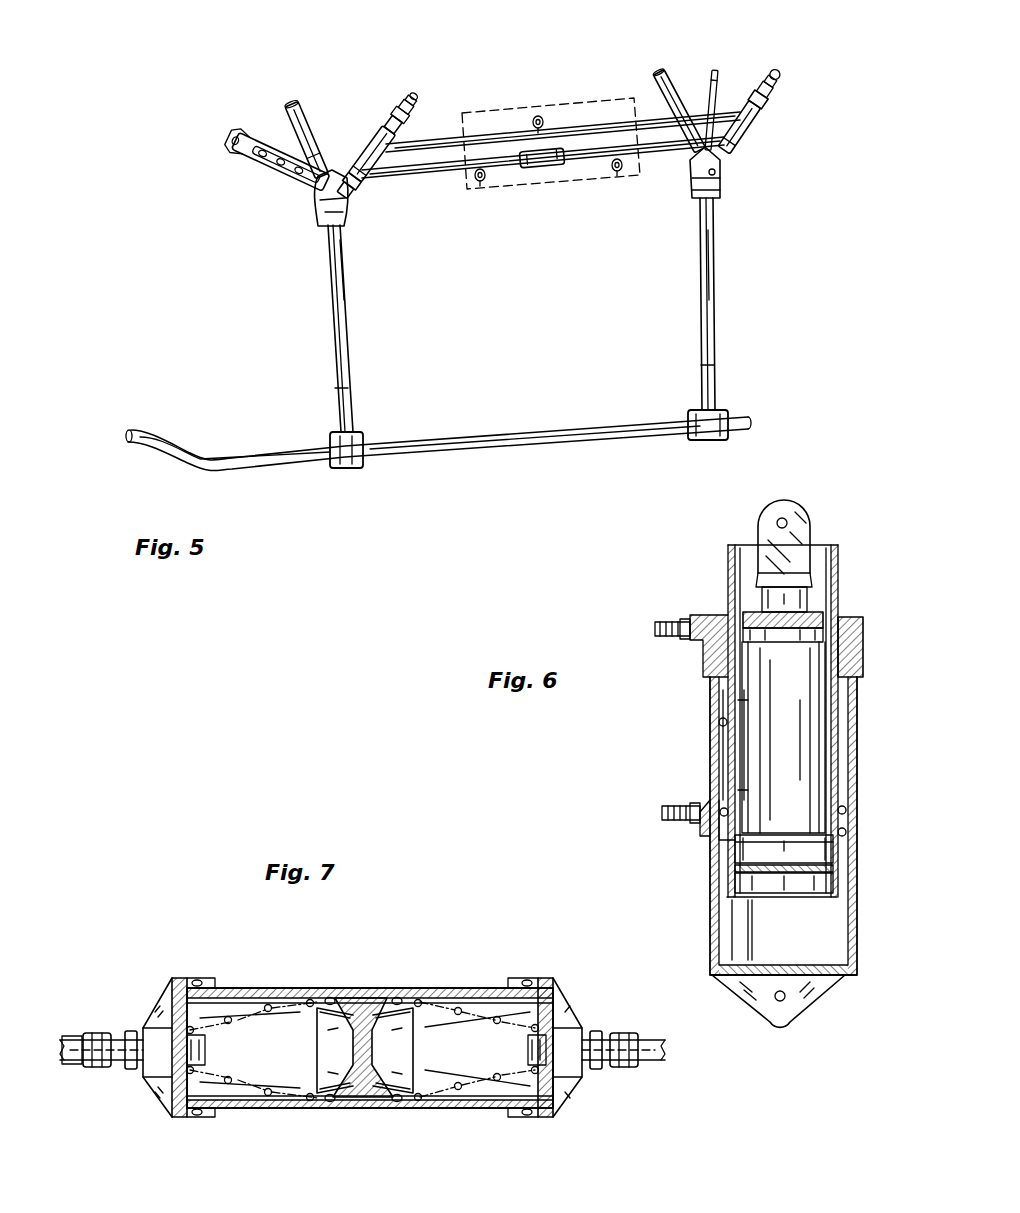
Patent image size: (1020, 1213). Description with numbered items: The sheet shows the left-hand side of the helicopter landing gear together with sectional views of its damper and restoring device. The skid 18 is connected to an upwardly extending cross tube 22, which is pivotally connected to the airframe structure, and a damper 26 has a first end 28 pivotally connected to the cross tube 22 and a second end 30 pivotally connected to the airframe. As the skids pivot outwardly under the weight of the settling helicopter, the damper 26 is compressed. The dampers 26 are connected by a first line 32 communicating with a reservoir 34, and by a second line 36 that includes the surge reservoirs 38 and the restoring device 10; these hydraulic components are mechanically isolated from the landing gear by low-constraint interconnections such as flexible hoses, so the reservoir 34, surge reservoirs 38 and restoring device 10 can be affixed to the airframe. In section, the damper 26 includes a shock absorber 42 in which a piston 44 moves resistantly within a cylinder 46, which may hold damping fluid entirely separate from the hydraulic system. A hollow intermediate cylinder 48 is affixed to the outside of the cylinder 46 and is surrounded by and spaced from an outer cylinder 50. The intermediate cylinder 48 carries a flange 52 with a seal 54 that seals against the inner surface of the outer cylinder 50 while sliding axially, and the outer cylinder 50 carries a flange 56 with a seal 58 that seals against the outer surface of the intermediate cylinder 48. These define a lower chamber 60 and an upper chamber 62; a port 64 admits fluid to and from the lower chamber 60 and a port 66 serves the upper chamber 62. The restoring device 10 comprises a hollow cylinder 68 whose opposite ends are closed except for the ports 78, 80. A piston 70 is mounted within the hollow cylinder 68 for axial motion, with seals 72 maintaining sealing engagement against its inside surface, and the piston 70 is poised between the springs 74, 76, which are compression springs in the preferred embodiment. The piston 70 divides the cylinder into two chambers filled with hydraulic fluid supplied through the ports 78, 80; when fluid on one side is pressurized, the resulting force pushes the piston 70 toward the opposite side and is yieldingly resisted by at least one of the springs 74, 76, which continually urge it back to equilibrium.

In FIG. 5, the restoring device 10 is at (548, 168).
In FIG. 7, the restoring device 10 is at (420, 1120).
In FIG. 5, the skid 18 is at (496, 456).
In FIG. 5, the cross tube 22 is at (340, 318).
In FIG. 5, the damper 26 is at (372, 145).
In FIG. 6, the damper 26 is at (878, 776).
In FIG. 5, the first end 28 is at (722, 168).
In FIG. 6, the first end 28 is at (790, 1012).
In FIG. 5, the second end 30 is at (782, 72).
In FIG. 6, the second end 30 is at (800, 500).
In FIG. 5, the first line 32 is at (436, 138).
In FIG. 5, the reservoir 34 is at (542, 117).
In FIG. 5, the second line 36 is at (403, 178).
In FIG. 5, the surge reservoirs 38 is at (478, 186).
In FIG. 6, the shock absorber 42 is at (805, 718).
In FIG. 6, the piston 44 is at (760, 598).
In FIG. 6, the cylinder 46 is at (822, 660).
In FIG. 6, the hollow intermediate cylinder 48 is at (730, 553).
In FIG. 6, the outer cylinder 50 is at (856, 886).
In FIG. 6, the flange 52 is at (750, 745).
In FIG. 6, the seal 54 is at (748, 728).
In FIG. 6, the flange 56 is at (833, 842).
In FIG. 6, the seal 58 is at (842, 808).
In FIG. 6, the lower chamber 60 is at (736, 760).
In FIG. 6, the upper chamber 62 is at (728, 694).
In FIG. 6, the port 64 is at (700, 828).
In FIG. 6, the port 66 is at (686, 648).
In FIG. 7, the hollow cylinder 68 is at (237, 985).
In FIG. 7, the piston 70 is at (355, 985).
In FIG. 7, the seals 72 is at (396, 1100).
In FIG. 7, the spring 74 is at (458, 1010).
In FIG. 7, the spring 76 is at (232, 1090).
In FIG. 7, the port 78 is at (645, 1030).
In FIG. 7, the port 80 is at (70, 1026).